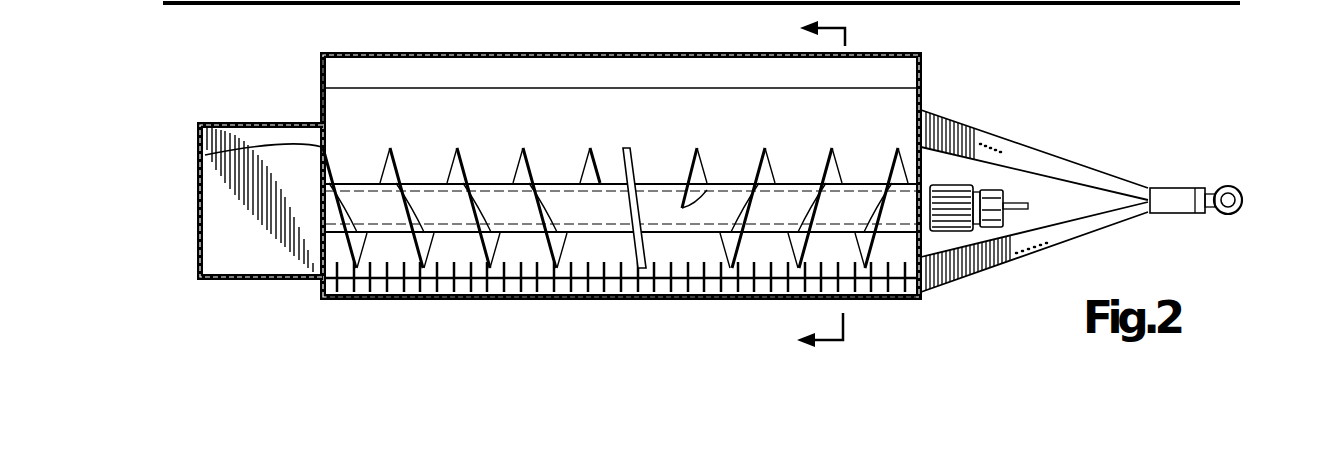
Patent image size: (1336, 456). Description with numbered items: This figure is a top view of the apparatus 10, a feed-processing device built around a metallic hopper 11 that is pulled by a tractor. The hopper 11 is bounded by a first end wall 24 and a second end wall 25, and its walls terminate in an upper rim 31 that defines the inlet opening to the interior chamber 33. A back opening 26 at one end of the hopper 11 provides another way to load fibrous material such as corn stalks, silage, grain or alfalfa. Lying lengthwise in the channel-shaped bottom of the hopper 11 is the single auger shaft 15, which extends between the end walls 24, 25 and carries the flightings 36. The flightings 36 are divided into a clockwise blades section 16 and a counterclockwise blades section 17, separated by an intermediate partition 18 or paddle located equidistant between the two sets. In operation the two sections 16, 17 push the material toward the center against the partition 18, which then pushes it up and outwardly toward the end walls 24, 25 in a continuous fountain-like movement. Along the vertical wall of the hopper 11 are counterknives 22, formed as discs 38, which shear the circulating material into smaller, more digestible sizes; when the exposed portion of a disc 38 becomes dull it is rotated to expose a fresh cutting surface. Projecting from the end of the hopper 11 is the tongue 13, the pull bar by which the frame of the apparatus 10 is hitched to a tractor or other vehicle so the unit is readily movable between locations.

The apparatus 10 is at (937, 52).
The hopper 11 is at (577, 96).
The tongue 13 is at (1120, 178).
The auger shaft 15 is at (715, 178).
The clockwise blades section 16 is at (833, 172).
The counterclockwise blades section 17 is at (514, 168).
The intermediate partition 18 is at (632, 152).
The counterknives 22 is at (418, 266).
The first end wall 24 is at (925, 95).
The second end wall 25 is at (320, 78).
The back opening 26 is at (205, 155).
The upper rim 31 is at (318, 57).
The interior chamber 33 is at (945, 120).
The flightings 36 is at (393, 148).
The discs 38 is at (396, 308).